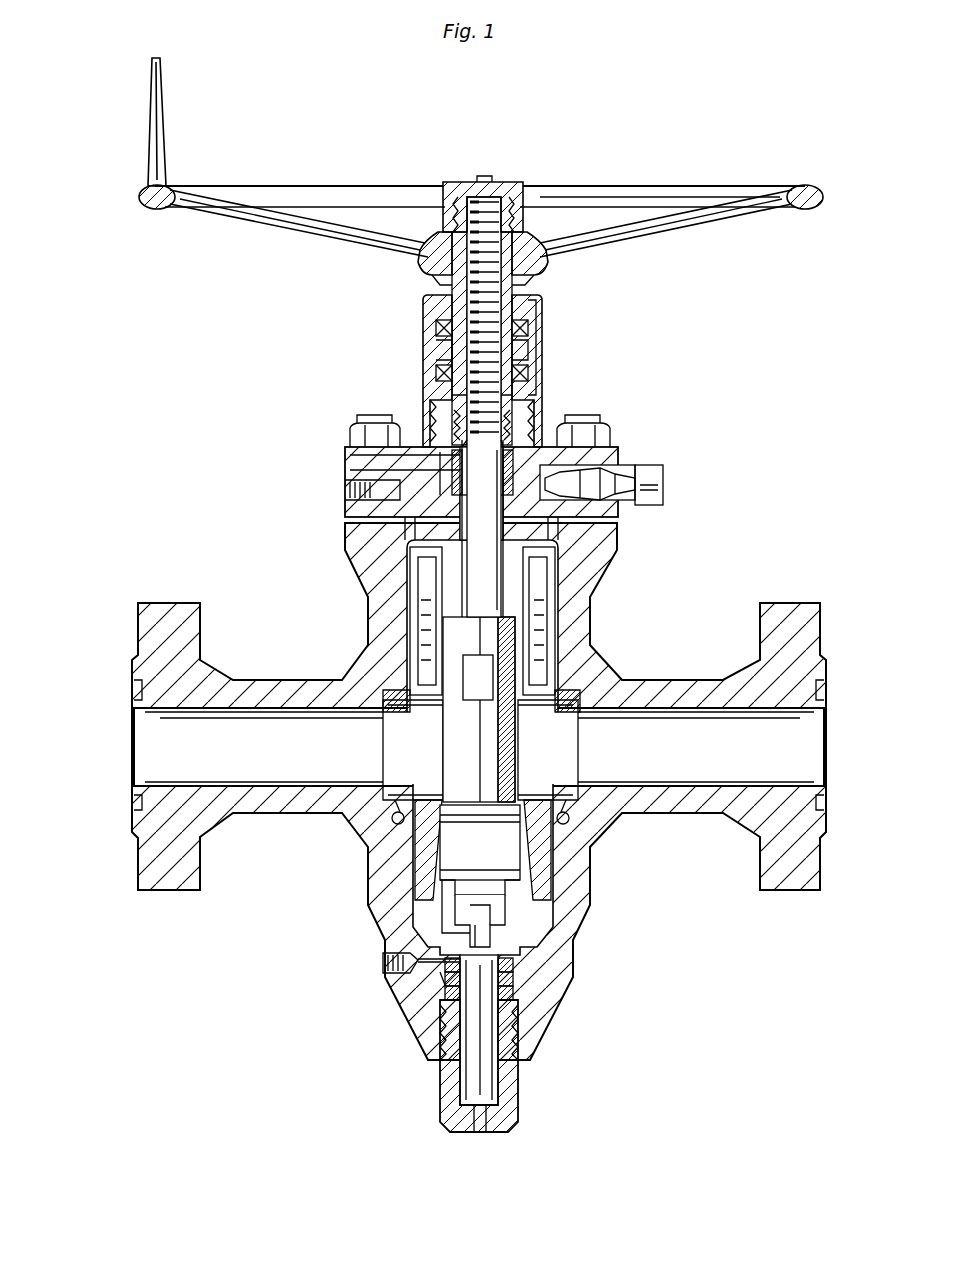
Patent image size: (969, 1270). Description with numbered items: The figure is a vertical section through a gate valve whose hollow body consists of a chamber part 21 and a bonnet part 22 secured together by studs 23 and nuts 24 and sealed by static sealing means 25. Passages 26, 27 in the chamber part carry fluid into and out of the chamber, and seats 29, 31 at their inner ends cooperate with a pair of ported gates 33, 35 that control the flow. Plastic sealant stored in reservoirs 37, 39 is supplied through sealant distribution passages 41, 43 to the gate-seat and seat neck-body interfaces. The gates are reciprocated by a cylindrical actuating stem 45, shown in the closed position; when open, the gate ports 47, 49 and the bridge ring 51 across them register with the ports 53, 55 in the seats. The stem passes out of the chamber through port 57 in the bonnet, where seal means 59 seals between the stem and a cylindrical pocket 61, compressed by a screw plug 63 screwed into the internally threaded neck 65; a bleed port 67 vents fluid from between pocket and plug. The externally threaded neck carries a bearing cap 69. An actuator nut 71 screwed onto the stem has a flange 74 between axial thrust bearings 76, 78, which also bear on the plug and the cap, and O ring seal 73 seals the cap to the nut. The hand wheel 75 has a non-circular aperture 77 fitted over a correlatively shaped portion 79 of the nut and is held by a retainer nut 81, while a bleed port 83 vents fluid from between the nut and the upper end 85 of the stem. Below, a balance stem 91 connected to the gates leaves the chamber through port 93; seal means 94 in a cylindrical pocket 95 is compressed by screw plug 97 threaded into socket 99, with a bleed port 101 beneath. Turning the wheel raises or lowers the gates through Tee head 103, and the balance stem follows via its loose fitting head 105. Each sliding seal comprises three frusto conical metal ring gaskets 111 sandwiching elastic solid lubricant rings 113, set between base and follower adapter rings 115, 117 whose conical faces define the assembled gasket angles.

The chamber part 21 is at (600, 633).
The bonnet part 22 is at (610, 460).
The studs 23 is at (600, 415).
The nuts 24 is at (612, 432).
The sealing means 25 is at (560, 530).
The passage 26 is at (150, 775).
The passage 27 is at (800, 777).
The seat 29 is at (440, 860).
The seat 31 is at (505, 880).
The ported gate 33 is at (445, 742).
The ported gate 35 is at (520, 742).
The reservoir 37 is at (418, 615).
The reservoir 39 is at (548, 615).
The sealant distribution passage 41 is at (400, 695).
The sealant distribution passage 43 is at (570, 695).
The actuating stem 45 is at (490, 566).
The gate port 47 is at (460, 830).
The gate port 49 is at (510, 905).
The bridge ring 51 is at (500, 835).
The port 53 is at (395, 800).
The port 55 is at (570, 800).
The port 57 is at (505, 510).
The seal means 59 is at (455, 475).
The cylindrical pocket 61 is at (400, 465).
The screw plug 63 is at (536, 405).
The neck 65 is at (536, 425).
The bleed port 67 is at (445, 460).
The bearing cap 69 is at (423, 308).
The actuator nut 71 is at (460, 292).
The O ring seal 73 is at (542, 310).
The flange 74 is at (436, 372).
The hand wheel 75 is at (800, 190).
The axial thrust bearing 76 is at (436, 328).
The non-circular aperture 77 is at (548, 262).
The axial thrust bearing 78 is at (530, 372).
The correlatively shaped portion 79 is at (428, 265).
The retainer nut 81 is at (518, 185).
The bleed port 83 is at (486, 176).
The upper end of the actuator stem 85 is at (498, 290).
The balance stem 91 is at (470, 1080).
The port 93 is at (515, 965).
The seal means 94 is at (515, 978).
The cylindrical pocket 95 is at (515, 992).
The screw plug 97 is at (518, 1095).
The threaded socket 99 is at (525, 1040).
The bleed port 101 is at (478, 1135).
The Tee head 103 is at (485, 686).
The loose fitting head 105 is at (470, 915).
The frusto conical metal ring gasket 111 is at (445, 982).
The elastic solid lubricant ring 113 is at (480, 1000).
The base adapter ring 115 is at (440, 970).
The follower adapter ring 117 is at (445, 995).